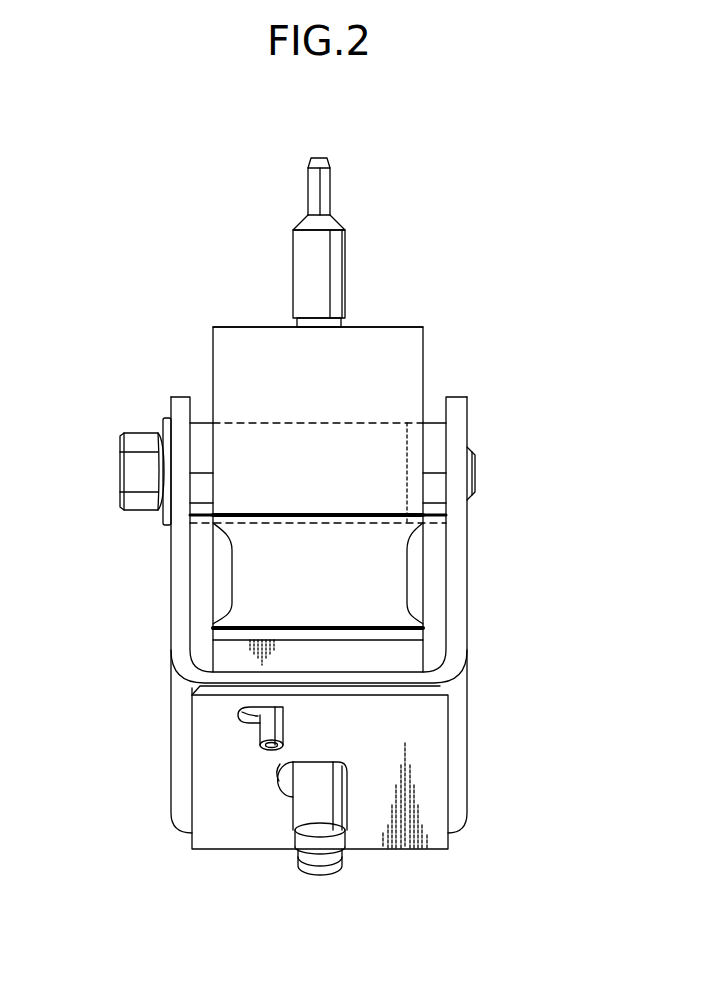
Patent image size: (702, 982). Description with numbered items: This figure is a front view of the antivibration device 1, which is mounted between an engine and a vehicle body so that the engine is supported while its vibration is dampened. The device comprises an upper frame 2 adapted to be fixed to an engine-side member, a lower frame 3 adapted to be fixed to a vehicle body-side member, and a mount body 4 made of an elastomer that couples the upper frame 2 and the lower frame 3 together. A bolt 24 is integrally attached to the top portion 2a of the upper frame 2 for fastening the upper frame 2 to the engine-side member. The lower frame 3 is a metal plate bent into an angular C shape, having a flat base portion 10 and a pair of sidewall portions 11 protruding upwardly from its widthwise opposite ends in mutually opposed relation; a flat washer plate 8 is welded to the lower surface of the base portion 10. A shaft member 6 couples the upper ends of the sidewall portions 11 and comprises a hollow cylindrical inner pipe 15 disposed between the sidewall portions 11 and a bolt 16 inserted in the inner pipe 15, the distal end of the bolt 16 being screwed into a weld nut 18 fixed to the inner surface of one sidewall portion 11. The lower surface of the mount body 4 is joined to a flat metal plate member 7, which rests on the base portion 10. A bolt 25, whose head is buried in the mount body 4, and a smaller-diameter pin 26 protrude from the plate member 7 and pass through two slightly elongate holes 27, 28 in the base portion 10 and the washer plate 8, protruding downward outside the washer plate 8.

The antivibration device 1 is at (538, 508).
The upper frame 2 is at (404, 322).
The top portion of the upper frame 2a is at (255, 326).
The lower frame 3 is at (474, 684).
The mount body 4 is at (392, 553).
The shaft member 6 is at (98, 432).
The plate member 7 is at (318, 632).
The washer plate 8 is at (427, 787).
The base portion 10 is at (457, 742).
The sidewall portions 11 is at (170, 583).
The inner pipe 15 is at (204, 422).
The bolt 16 is at (476, 474).
The weld nut 18 is at (434, 422).
The bolt 24 is at (330, 250).
The bolt 25 is at (337, 815).
The pin 26 is at (262, 732).
The hole 27 is at (292, 797).
The hole 28 is at (250, 727).